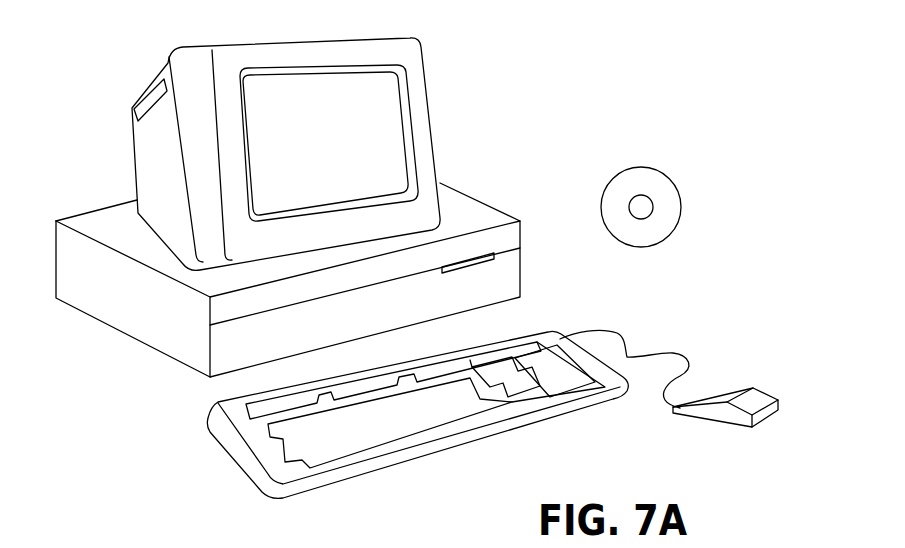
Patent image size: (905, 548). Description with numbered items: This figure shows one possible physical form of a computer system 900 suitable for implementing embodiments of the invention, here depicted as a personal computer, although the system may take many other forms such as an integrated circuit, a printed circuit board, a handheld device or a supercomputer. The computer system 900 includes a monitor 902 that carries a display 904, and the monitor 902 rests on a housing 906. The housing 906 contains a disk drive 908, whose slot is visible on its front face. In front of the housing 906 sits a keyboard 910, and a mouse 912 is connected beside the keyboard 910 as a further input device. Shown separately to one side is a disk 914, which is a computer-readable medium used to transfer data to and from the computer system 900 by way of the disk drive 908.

The computer system 900 is at (550, 88).
The monitor 902 is at (434, 130).
The display 904 is at (393, 100).
The housing 906 is at (165, 356).
The disk drive 908 is at (495, 256).
The keyboard 910 is at (505, 428).
The mouse 912 is at (756, 393).
The disk 914 is at (658, 166).